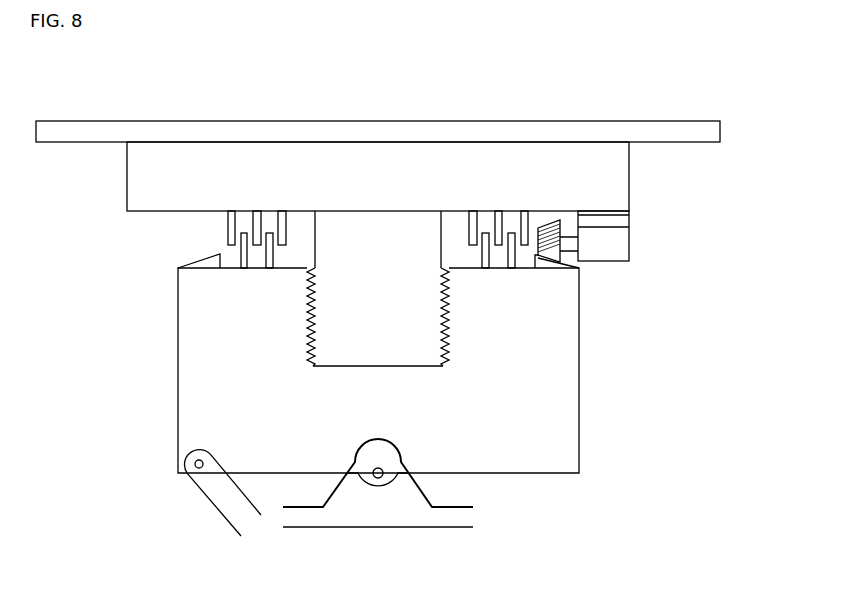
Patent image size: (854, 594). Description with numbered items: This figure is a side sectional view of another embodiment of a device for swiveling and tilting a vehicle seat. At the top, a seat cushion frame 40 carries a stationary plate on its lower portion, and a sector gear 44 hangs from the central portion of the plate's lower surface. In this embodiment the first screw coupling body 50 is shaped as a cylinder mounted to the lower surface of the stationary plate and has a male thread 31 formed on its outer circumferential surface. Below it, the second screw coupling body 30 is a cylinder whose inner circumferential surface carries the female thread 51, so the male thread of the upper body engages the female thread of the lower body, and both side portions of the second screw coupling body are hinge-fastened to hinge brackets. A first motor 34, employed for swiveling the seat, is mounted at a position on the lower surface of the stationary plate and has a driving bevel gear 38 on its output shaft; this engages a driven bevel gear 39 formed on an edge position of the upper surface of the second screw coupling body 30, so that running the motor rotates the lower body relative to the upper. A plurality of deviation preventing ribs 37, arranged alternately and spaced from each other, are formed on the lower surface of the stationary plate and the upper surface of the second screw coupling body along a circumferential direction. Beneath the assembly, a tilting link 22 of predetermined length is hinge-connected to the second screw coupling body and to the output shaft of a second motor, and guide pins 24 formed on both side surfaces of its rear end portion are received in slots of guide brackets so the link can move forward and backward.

The seat cushion frame 40 is at (562, 133).
The sector gear 44 is at (617, 176).
The first screw coupling body 50 is at (290, 231).
The deviation preventing ribs 37 is at (245, 257).
The male thread 31 is at (312, 312).
The female thread 51 is at (318, 346).
The driving bevel gear 38 is at (556, 262).
The driven bevel gear 39 is at (540, 265).
The first motor 34 is at (622, 245).
The second screw coupling body 30 is at (420, 363).
The tilting link 22 is at (205, 490).
The guide pins 24 is at (417, 489).